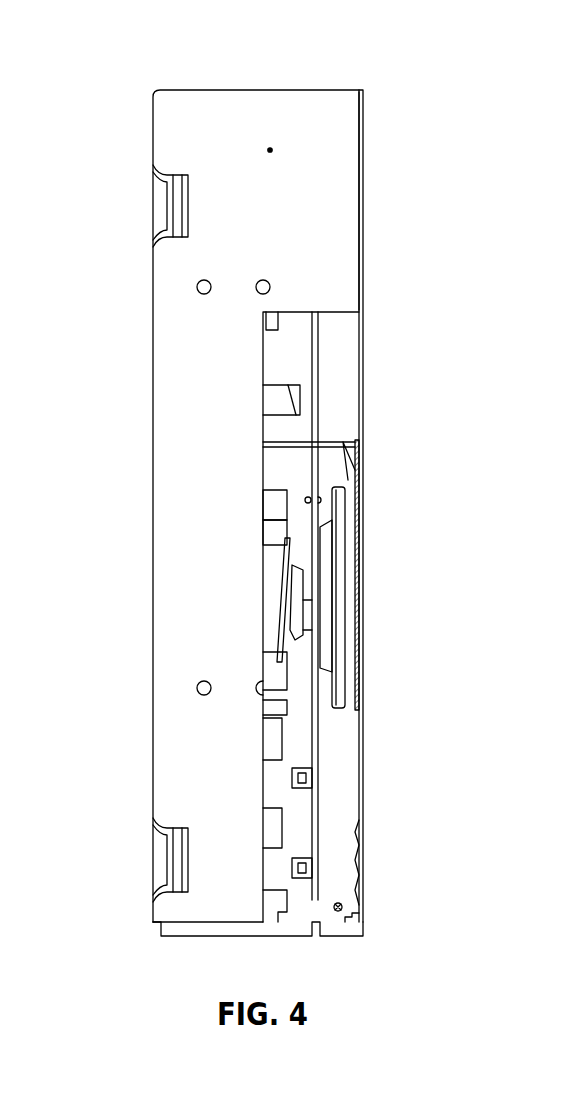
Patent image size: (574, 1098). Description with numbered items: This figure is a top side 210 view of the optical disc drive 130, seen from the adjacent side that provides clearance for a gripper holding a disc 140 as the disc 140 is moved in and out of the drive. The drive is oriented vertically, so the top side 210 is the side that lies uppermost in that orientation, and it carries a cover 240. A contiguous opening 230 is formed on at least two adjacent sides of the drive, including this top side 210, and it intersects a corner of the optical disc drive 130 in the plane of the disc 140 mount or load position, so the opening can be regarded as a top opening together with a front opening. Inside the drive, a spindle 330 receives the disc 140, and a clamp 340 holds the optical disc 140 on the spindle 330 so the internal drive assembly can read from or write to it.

The optical disc drive 130 is at (276, 25).
The top side 210 is at (155, 92).
The cover 240 is at (315, 210).
The contiguous opening 230 is at (300, 357).
The disc 140 is at (315, 423).
The clamp 340 is at (347, 577).
The spindle 330 is at (285, 578).